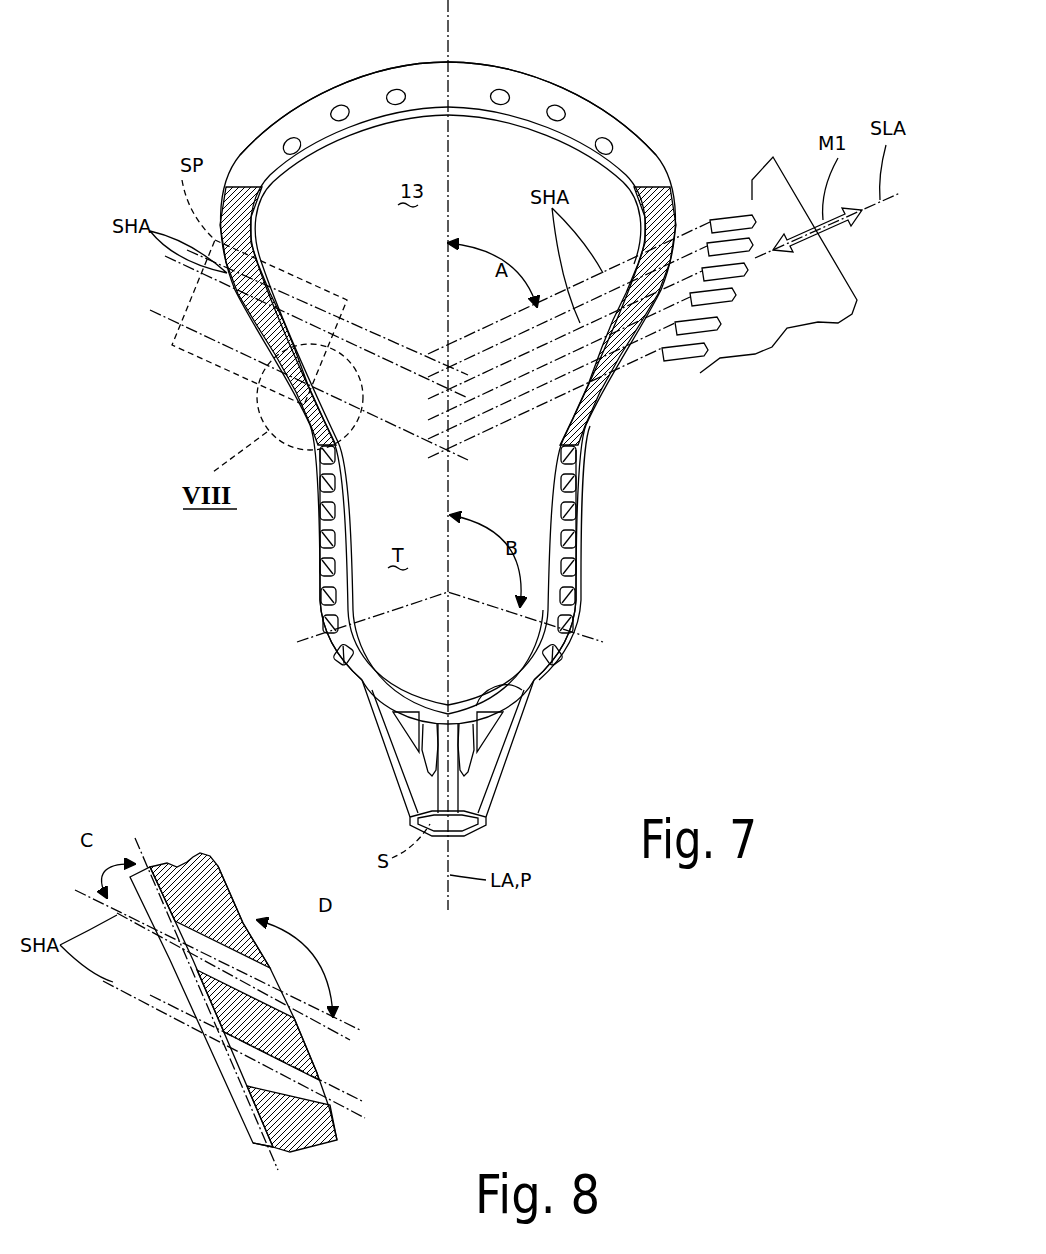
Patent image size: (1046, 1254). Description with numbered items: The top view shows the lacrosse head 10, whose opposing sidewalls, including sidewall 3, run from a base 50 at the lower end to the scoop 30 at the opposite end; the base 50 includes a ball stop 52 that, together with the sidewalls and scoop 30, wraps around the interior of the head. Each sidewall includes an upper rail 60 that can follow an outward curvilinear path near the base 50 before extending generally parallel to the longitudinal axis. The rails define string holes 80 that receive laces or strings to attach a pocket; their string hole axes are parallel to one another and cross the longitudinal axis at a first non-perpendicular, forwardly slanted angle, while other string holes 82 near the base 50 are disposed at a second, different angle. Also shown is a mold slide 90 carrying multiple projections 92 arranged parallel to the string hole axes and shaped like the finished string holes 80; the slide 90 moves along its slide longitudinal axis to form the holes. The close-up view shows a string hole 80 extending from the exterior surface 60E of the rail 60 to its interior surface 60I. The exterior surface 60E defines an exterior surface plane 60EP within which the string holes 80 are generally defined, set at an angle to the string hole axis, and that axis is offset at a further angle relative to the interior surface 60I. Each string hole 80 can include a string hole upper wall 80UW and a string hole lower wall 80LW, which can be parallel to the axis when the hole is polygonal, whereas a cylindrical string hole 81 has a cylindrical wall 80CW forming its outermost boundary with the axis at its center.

In FIG. 7, the lacrosse head 10 is at (185, 85).
In FIG. 8, the lacrosse head 10 is at (150, 787).
In FIG. 7, the scoop 30 is at (540, 70).
In FIG. 7, the sidewall 3 is at (320, 530).
In FIG. 7, the string holes 80 is at (290, 362).
In FIG. 8, the string holes 80 is at (297, 1020).
In FIG. 7, the other string holes 82 is at (337, 632).
In FIG. 7, the upper rail 60 is at (350, 672).
In FIG. 8, the upper rail 60 is at (208, 857).
In FIG. 7, the ball stop 52 is at (503, 683).
In FIG. 7, the base 50 is at (487, 778).
In FIG. 7, the mold slide 90 is at (783, 317).
In FIG. 7, the projections 92 is at (687, 330).
In FIG. 8, the string hole upper wall 80UW is at (227, 907).
In FIG. 8, the string hole lower wall 80LW is at (233, 980).
In FIG. 8, the cylindrical wall 80CW is at (260, 1040).
In FIG. 8, the string hole 81 is at (317, 1093).
In FIG. 8, the exterior surface 60E is at (262, 1113).
In FIG. 8, the interior surface 60I is at (337, 1140).
In FIG. 8, the exterior surface plane 60EP is at (277, 1170).